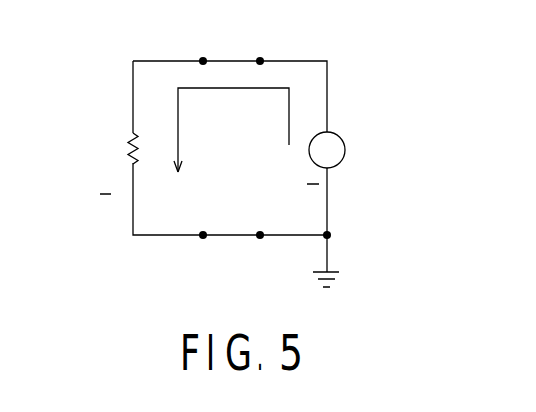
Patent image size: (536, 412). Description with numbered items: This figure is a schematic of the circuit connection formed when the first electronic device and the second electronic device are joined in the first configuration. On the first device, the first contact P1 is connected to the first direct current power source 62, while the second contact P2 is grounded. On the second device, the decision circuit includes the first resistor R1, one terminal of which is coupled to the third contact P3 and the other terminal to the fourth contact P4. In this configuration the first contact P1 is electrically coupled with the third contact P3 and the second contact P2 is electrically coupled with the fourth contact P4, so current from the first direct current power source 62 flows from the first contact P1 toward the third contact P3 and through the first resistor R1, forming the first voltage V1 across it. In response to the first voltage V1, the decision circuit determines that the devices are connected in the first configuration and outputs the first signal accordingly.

The first direct current power source 62 is at (345, 148).
The first resistor R1 is at (146, 148).
The first voltage V1 is at (115, 142).
The first contact P1 is at (263, 43).
The second contact P2 is at (265, 254).
The third contact P3 is at (206, 43).
The fourth contact P4 is at (207, 254).